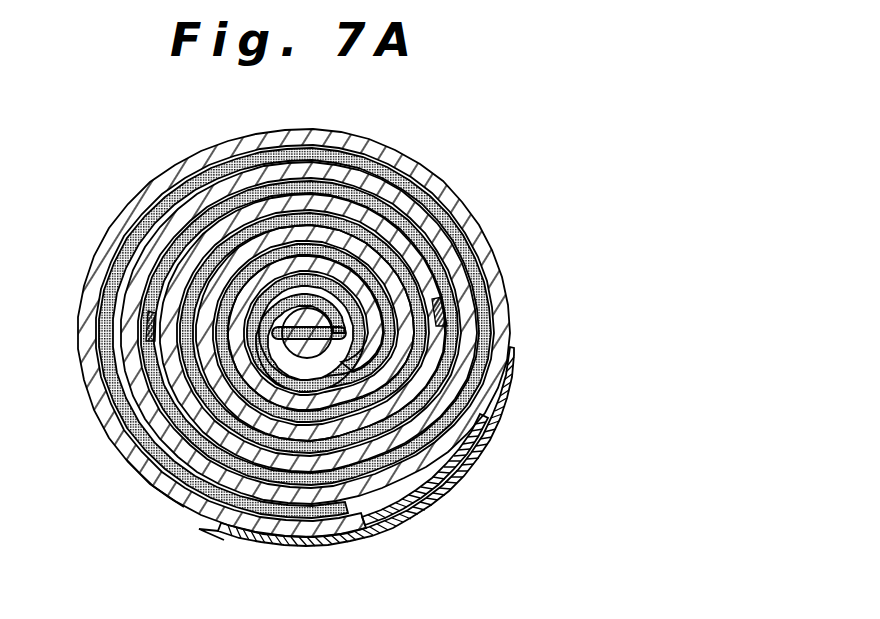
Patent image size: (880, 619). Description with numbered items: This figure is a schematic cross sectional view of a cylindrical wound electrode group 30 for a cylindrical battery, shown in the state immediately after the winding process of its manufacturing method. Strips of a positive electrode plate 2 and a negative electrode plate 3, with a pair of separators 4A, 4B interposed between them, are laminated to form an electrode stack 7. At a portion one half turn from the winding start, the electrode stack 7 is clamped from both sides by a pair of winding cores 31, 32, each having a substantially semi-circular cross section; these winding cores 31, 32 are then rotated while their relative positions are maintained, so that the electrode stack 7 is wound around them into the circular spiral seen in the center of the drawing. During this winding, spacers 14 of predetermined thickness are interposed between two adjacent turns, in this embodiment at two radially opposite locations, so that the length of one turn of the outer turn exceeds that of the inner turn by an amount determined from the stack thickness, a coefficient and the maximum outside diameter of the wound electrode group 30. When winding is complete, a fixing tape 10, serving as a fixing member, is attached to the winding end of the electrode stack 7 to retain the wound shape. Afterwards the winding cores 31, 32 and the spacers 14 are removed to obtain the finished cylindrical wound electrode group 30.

The wound electrode group 30 is at (422, 142).
The winding core 31 is at (306, 302).
The winding core 32 is at (148, 468).
The positive electrode plate 2 is at (465, 410).
The negative electrode plate 3 is at (442, 442).
The separator 4A is at (398, 498).
The separator 4B is at (378, 515).
The electrode stack 7 is at (543, 413).
The spacer 14 is at (446, 324).
The fixing tape 10 is at (232, 530).